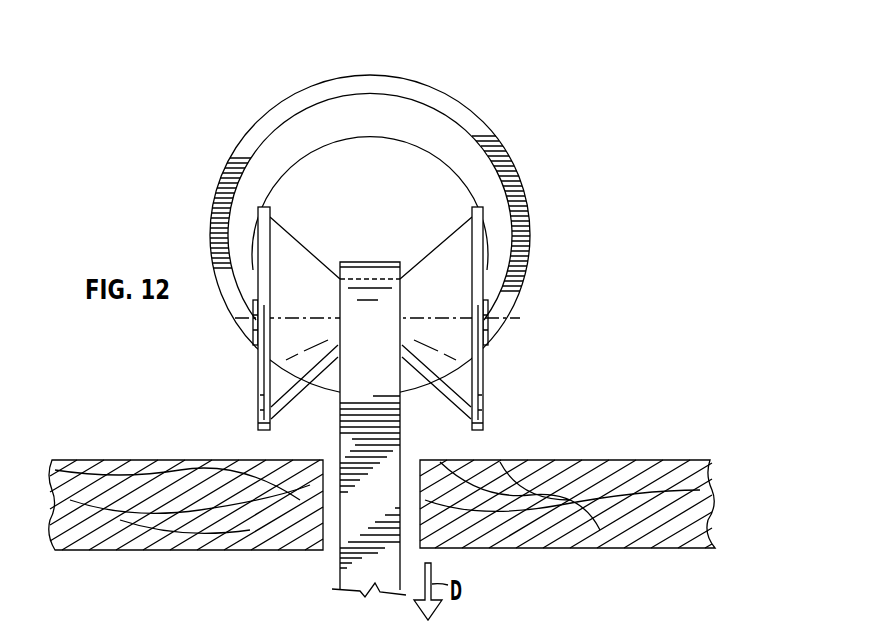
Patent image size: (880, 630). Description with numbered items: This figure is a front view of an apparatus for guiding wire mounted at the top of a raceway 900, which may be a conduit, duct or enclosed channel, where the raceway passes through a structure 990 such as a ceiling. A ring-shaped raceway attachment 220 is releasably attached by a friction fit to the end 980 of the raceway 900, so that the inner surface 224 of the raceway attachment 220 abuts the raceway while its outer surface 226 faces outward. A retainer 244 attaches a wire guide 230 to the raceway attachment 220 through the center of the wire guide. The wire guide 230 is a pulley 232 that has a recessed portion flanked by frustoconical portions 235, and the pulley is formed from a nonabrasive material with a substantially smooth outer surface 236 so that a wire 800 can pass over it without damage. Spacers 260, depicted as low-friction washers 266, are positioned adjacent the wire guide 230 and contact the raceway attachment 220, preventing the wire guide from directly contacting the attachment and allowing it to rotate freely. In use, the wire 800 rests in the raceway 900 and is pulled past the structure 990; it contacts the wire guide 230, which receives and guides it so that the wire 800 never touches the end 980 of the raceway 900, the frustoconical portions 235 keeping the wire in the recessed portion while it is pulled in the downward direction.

The raceway attachment 220 is at (403, 88).
The outer surface 226 is at (486, 108).
The raceway 900 is at (483, 180).
The end 980 is at (282, 140).
The inner surface 224 is at (447, 149).
The spacers 260 is at (485, 235).
The washers 266 is at (483, 263).
The retainer 244 is at (485, 323).
The wire guide 230 is at (482, 422).
The pulley 232 is at (455, 362).
The frustoconical portions 235 is at (457, 355).
The outer surface 236 is at (302, 403).
The structure 990 is at (660, 465).
The wire 800 is at (340, 572).